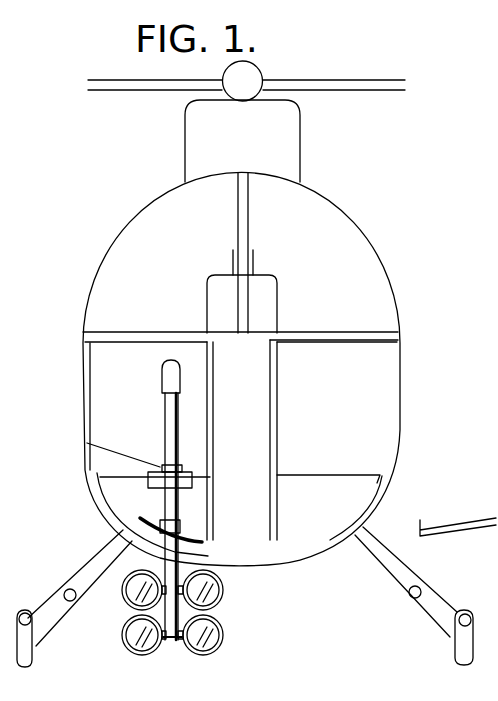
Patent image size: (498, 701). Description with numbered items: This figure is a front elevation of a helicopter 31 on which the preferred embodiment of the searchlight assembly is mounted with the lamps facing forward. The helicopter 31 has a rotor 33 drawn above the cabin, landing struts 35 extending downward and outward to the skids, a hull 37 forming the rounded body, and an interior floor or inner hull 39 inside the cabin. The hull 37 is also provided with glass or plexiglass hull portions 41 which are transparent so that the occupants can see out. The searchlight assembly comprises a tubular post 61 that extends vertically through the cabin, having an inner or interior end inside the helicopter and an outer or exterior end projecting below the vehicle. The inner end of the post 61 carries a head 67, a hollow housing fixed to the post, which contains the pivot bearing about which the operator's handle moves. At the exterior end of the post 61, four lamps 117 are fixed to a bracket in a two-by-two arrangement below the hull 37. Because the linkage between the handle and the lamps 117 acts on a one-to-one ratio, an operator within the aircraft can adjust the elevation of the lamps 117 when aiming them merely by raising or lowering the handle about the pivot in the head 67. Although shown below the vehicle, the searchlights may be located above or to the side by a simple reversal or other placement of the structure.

The helicopter 31 is at (363, 210).
The rotor 33 is at (352, 91).
The landing struts 35 is at (405, 572).
The hull 37 is at (288, 562).
The interior floor or inner hull 39 is at (310, 475).
The transparent hull portions 41 is at (94, 407).
The tubular post 61 is at (166, 418).
The head 67 is at (167, 376).
The lamps 117 is at (118, 603).